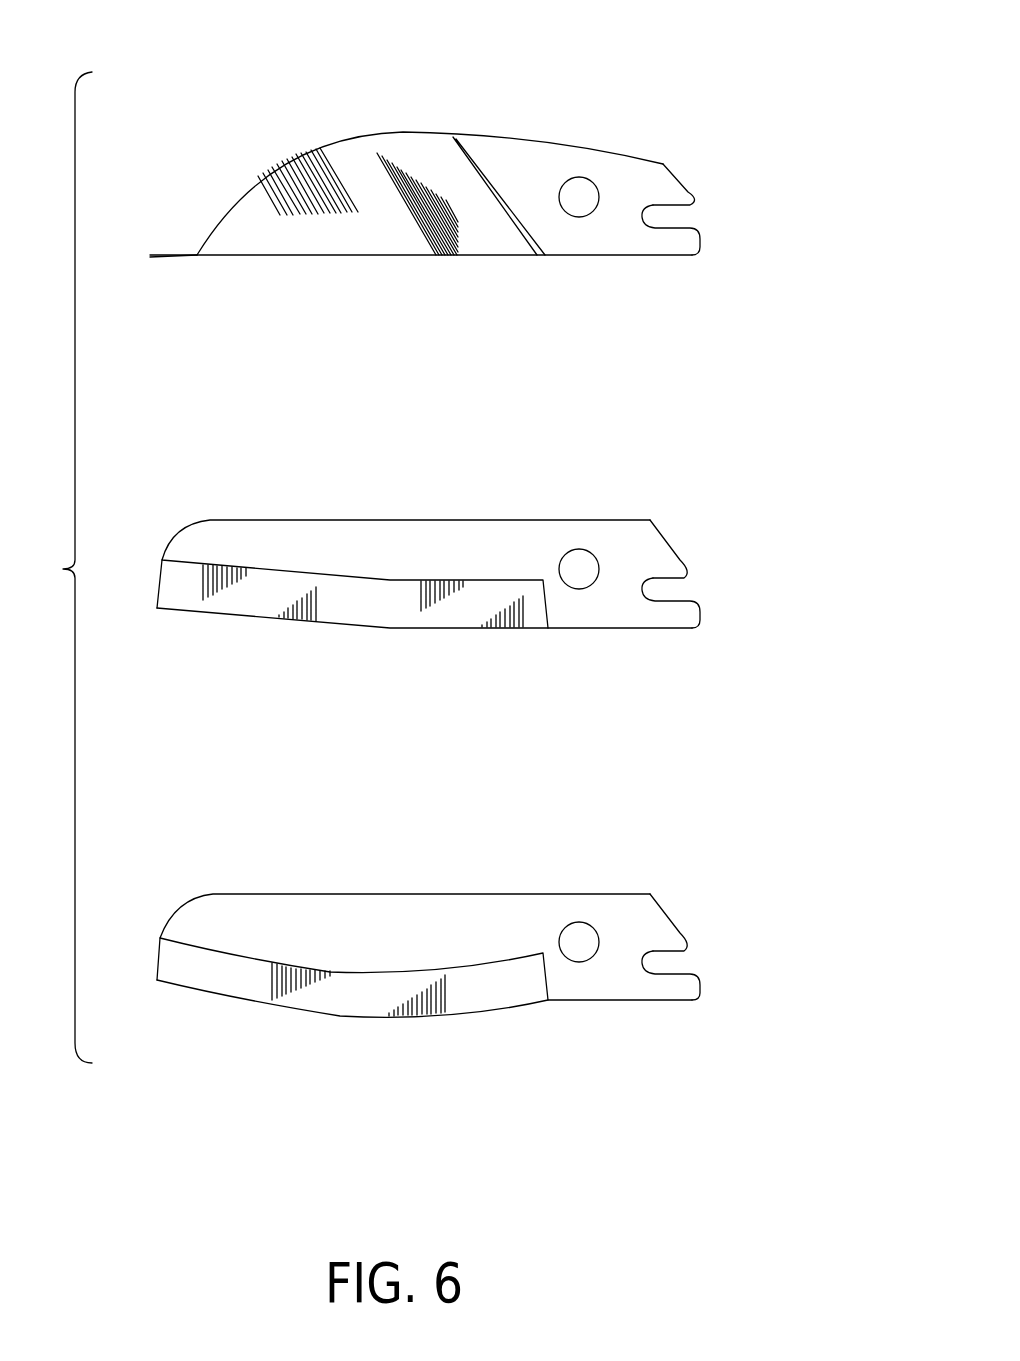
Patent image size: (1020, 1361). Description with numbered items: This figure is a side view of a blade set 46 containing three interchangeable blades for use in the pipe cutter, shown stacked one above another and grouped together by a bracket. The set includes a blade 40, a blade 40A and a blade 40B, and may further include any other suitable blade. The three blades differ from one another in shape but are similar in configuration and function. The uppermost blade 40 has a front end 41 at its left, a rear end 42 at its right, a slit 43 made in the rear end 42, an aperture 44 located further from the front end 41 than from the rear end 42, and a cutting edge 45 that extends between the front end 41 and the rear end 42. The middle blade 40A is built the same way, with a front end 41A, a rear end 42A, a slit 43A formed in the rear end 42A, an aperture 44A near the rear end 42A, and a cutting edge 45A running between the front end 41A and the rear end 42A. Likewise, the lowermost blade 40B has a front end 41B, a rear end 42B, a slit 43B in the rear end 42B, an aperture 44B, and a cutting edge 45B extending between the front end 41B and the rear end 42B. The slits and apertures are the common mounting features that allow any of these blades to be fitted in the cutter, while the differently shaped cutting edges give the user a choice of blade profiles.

The blade 40 is at (428, 155).
The front end 41 is at (150, 257).
The rear end 42 is at (683, 178).
The slit 43 is at (683, 222).
The aperture 44 is at (573, 187).
The cutting edge 45 is at (377, 255).
The blade set 46 is at (61, 567).
The blade 40A is at (378, 540).
The front end 41A is at (153, 613).
The rear end 42A is at (670, 547).
The slit 43A is at (673, 597).
The aperture 44A is at (573, 560).
The cutting edge 45A is at (378, 630).
The blade 40B is at (367, 912).
The front end 41B is at (155, 985).
The rear end 42B is at (680, 927).
The slit 43B is at (667, 967).
The aperture 44B is at (563, 933).
The cutting edge 45B is at (332, 1017).